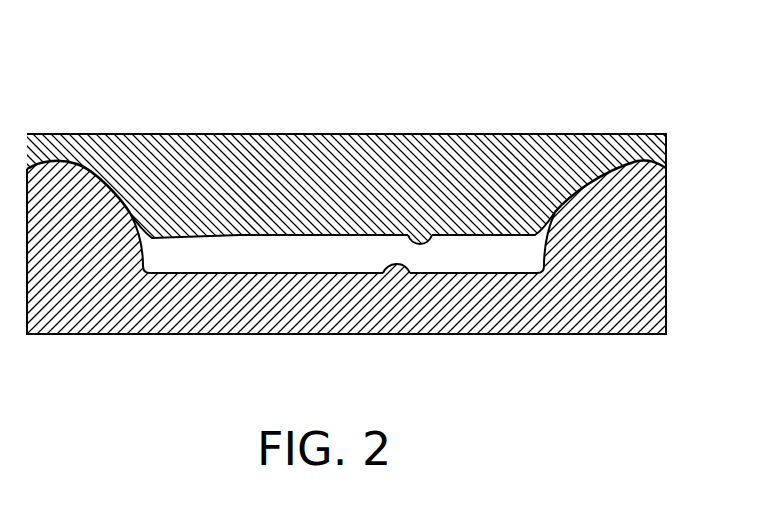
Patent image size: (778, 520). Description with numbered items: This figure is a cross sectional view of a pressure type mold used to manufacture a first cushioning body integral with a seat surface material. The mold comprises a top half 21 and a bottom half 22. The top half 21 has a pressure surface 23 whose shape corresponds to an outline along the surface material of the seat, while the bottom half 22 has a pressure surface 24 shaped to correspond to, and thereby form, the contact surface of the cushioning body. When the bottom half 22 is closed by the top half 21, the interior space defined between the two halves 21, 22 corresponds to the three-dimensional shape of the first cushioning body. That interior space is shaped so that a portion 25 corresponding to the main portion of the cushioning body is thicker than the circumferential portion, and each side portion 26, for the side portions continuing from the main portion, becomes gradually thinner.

The top half 21 is at (336, 150).
The bottom half 22 is at (313, 318).
The pressure surface 23 is at (428, 236).
The pressure surface 24 is at (398, 264).
The portion 25 is at (269, 252).
The side portion 26 is at (78, 163).